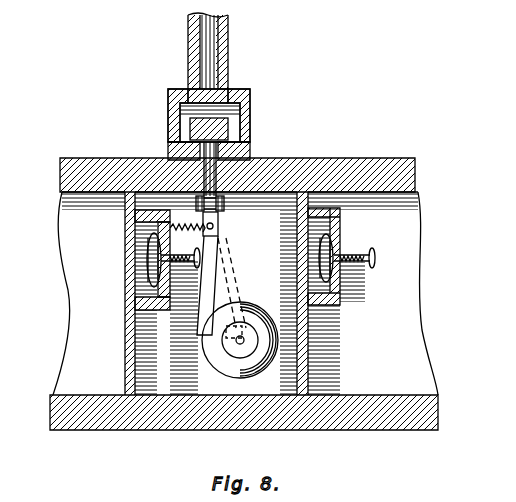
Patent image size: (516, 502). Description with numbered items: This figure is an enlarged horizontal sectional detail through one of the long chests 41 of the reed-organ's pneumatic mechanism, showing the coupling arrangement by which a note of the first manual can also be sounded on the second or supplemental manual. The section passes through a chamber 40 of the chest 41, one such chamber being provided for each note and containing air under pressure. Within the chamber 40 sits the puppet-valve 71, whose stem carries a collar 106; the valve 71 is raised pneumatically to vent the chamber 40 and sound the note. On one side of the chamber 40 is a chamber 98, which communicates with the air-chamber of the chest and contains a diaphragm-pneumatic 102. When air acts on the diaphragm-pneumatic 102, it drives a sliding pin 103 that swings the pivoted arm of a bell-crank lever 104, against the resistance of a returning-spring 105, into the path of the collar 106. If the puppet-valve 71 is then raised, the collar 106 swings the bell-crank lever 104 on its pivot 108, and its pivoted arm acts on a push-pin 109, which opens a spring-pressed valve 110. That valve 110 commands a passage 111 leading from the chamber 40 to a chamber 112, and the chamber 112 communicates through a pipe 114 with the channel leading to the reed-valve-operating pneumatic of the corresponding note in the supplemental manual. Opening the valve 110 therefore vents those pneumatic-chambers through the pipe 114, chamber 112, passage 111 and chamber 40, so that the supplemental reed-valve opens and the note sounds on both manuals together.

The chamber 40 is at (311, 287).
The long chest 41 is at (408, 170).
The puppet-valve 71 is at (252, 372).
The chamber 98 is at (125, 231).
The diaphragm-pneumatic 102 is at (135, 268).
The sliding pin 103 is at (136, 301).
The bell-crank lever 104 is at (205, 292).
The returning-spring 105 is at (172, 225).
The collar 106 is at (236, 343).
The pivot 108 is at (219, 213).
The push-pin 109 is at (260, 155).
The spring-pressed valve 110 is at (228, 130).
The passage 111 is at (262, 159).
The chamber 112 is at (240, 104).
The pipe 114 is at (218, 43).